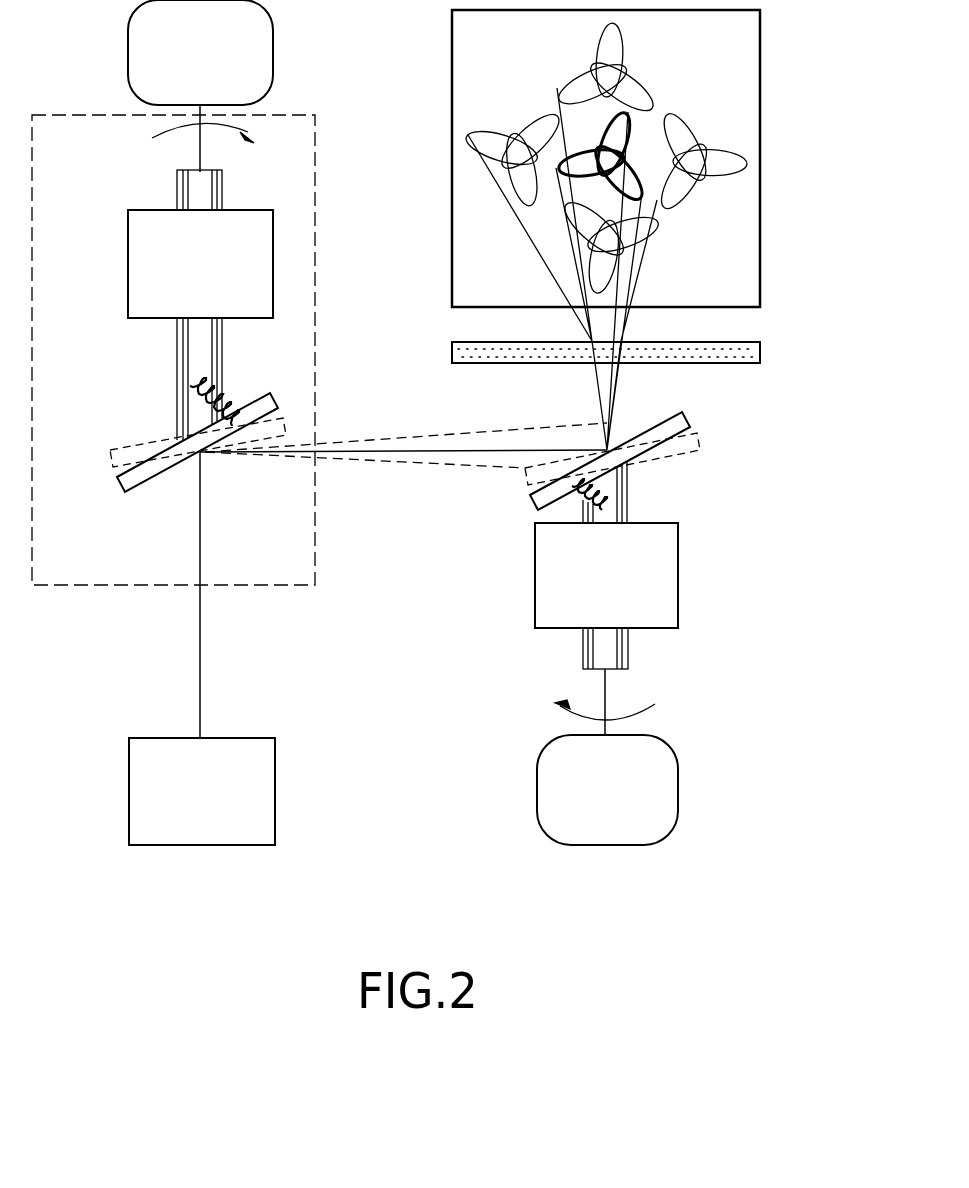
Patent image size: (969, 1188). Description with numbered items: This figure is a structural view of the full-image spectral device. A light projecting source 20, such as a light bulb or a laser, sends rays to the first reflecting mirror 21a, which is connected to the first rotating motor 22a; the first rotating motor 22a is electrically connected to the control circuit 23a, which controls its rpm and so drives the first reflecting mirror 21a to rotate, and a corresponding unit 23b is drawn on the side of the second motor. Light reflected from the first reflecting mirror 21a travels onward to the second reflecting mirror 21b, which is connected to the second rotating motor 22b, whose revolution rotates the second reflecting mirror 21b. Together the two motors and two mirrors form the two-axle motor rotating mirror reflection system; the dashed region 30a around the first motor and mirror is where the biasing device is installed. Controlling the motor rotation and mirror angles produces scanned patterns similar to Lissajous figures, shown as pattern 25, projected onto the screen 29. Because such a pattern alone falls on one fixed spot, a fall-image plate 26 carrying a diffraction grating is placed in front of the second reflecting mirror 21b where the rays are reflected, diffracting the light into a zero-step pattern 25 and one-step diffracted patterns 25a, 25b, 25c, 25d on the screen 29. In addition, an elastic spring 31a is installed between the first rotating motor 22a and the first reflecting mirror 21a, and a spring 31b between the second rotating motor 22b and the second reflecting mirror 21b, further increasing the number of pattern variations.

The light projecting source 20 is at (270, 810).
The first reflecting mirror 21a is at (135, 482).
The second reflecting mirror 21b is at (572, 476).
The first rotating motor 22a is at (135, 272).
The second rotating motor 22b is at (540, 590).
The control circuit 23a is at (140, 45).
The second drive unit 23b is at (548, 800).
The scanned pattern 25 is at (628, 127).
The one-step diffracted pattern 25a is at (638, 75).
The one-step diffracted pattern 25b is at (683, 197).
The one-step diffracted pattern 25c is at (637, 248).
The one-step diffracted pattern 25d is at (523, 125).
The fall-image plate 26 is at (750, 355).
The screen 29 is at (750, 283).
The first scanning unit 30a is at (315, 407).
The spring 31a is at (233, 408).
The spring 31b is at (560, 500).